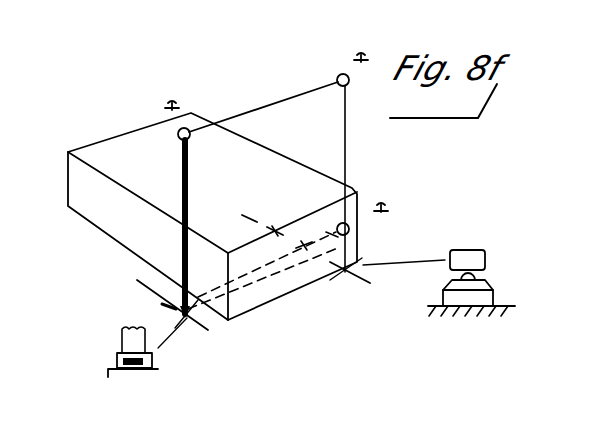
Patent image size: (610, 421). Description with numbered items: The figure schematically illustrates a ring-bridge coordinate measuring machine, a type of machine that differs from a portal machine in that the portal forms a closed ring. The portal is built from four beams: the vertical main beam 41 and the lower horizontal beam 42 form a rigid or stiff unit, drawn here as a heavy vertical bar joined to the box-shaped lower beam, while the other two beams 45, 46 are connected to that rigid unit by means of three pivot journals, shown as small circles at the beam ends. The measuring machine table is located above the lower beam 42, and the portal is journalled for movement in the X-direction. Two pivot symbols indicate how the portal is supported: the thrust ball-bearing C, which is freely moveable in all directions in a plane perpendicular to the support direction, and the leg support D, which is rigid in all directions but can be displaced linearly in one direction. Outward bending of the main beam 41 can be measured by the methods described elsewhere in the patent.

The vertical main beam 41 is at (181, 184).
The lower horizontal beam 42 is at (280, 288).
The beam 45 is at (303, 91).
The beam 46 is at (346, 109).
The thrust ball-bearing pivot C is at (422, 267).
The linearly displaceable rigid leg pivot D is at (156, 328).